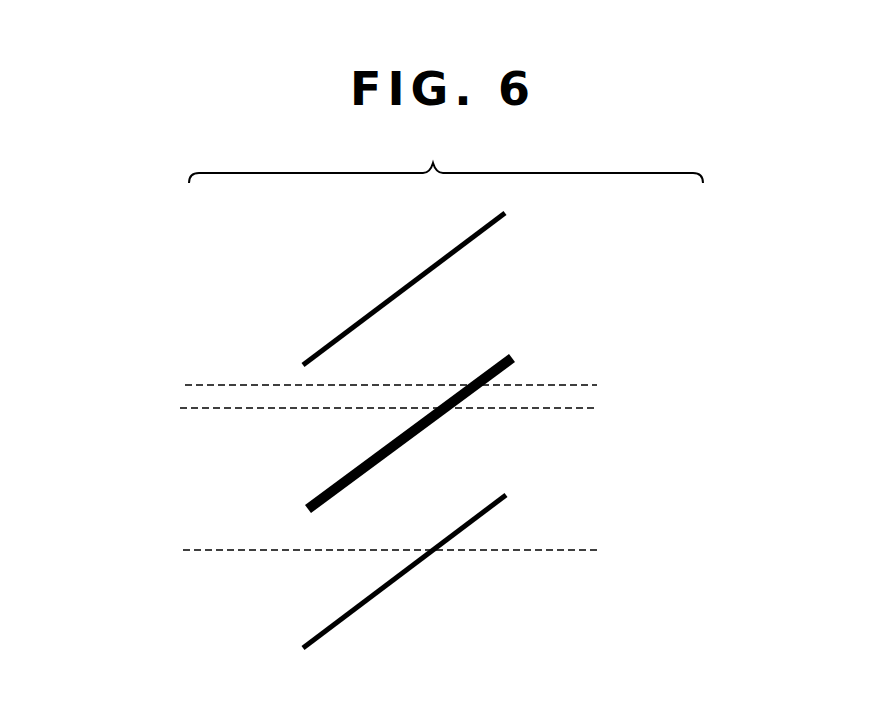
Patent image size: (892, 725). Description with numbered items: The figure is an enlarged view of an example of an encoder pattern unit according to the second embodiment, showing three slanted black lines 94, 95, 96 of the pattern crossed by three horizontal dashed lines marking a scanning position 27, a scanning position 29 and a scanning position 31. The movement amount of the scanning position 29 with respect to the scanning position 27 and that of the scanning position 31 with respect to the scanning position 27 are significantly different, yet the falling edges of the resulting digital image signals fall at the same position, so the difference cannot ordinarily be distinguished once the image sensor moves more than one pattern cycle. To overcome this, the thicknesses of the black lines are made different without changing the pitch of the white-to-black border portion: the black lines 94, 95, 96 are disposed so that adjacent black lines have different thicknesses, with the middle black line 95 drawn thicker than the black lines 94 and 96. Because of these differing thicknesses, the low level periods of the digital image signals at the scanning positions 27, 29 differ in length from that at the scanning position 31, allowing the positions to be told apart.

The black line 94 is at (509, 218).
The black line 95 is at (513, 355).
The black line 96 is at (510, 505).
The scanning position 27 is at (597, 385).
The scanning position 29 is at (597, 408).
The scanning position 31 is at (598, 550).